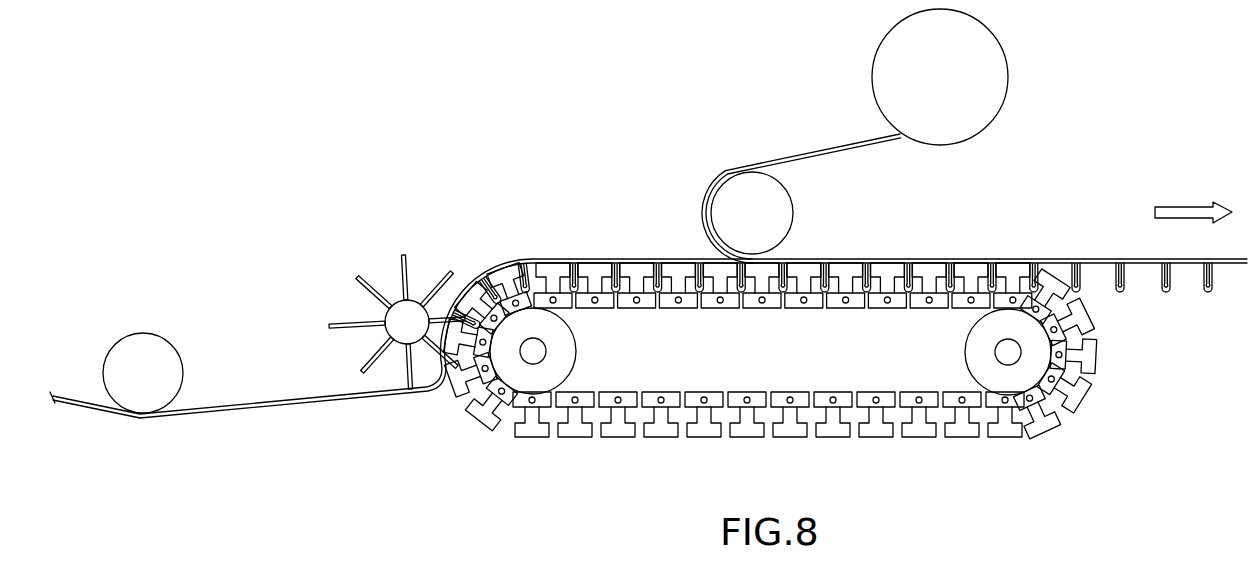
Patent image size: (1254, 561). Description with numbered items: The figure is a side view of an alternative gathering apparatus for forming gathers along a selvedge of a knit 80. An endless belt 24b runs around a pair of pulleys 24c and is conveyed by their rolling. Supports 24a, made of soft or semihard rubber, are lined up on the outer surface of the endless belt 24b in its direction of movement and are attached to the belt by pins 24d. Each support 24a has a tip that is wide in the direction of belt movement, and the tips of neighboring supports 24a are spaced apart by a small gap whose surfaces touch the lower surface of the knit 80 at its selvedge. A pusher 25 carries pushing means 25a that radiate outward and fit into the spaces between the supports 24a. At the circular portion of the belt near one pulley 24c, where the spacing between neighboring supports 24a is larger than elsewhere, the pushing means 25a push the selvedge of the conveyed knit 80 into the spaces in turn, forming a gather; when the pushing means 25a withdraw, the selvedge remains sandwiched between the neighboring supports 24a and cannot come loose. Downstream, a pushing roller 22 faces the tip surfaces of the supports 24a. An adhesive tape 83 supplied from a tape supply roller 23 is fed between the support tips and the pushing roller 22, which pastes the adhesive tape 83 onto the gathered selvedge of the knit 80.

The pushing roller 22 is at (794, 217).
The tape supply roller 23 is at (885, 80).
The support 24a is at (553, 270).
The endless belt 24b is at (826, 303).
The pulley 24c is at (570, 352).
The pin 24d is at (763, 303).
The pusher 25 is at (376, 236).
The pushing means 25a is at (401, 257).
The knit 80 is at (303, 406).
The adhesive tape 83 is at (802, 158).